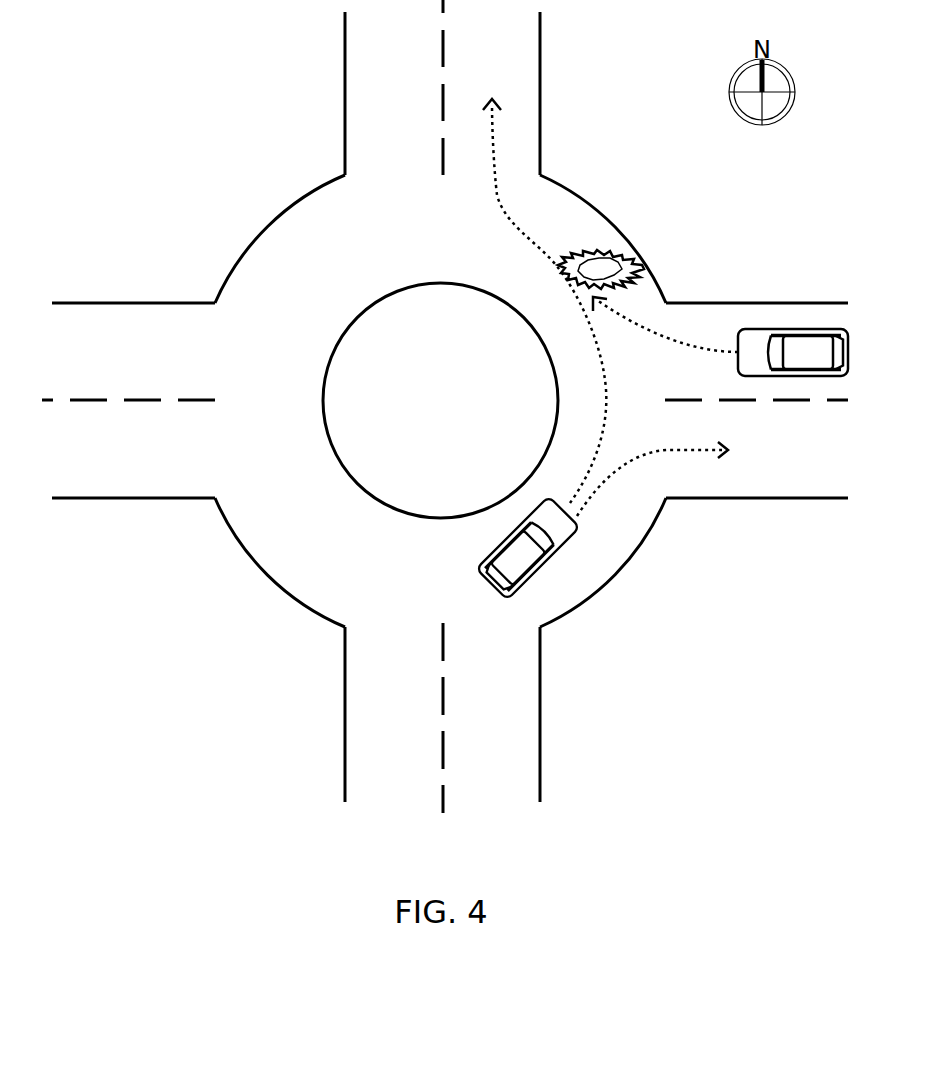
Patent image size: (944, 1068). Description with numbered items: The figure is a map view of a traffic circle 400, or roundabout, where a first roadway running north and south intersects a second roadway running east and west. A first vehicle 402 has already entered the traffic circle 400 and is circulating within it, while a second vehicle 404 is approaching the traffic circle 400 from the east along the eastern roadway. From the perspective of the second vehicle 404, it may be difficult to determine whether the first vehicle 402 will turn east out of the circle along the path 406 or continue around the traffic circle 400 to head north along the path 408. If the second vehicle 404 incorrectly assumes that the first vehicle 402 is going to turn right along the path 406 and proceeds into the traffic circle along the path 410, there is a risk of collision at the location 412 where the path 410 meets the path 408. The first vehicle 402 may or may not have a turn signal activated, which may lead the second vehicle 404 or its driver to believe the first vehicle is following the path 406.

The traffic circle 400 is at (238, 118).
The first vehicle 402 is at (575, 530).
The second vehicle 404 is at (757, 332).
The path 406 is at (652, 471).
The path 408 is at (531, 301).
The path 410 is at (665, 324).
The collision location 412 is at (628, 262).